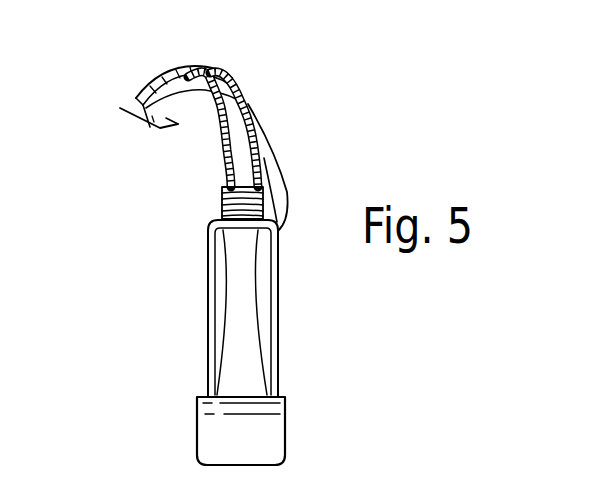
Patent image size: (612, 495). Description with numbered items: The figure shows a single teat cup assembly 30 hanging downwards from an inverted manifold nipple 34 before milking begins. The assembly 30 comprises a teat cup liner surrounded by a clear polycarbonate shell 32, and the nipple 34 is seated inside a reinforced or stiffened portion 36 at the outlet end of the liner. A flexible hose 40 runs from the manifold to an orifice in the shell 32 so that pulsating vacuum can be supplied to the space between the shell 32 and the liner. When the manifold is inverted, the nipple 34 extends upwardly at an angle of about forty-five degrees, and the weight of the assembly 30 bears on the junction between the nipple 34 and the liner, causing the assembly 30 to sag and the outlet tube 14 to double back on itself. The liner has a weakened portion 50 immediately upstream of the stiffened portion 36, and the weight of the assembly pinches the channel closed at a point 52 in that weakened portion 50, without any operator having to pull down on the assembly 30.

The outlet tube 14 is at (219, 134).
The teat cup assembly 30 is at (241, 342).
The teat cup shell 32 is at (277, 316).
The manifold nipple 34 is at (153, 118).
The reinforced portion 36 is at (172, 67).
The flexible hose 40 is at (282, 180).
The weakened portion 50 is at (201, 67).
The pinch point 52 is at (227, 74).